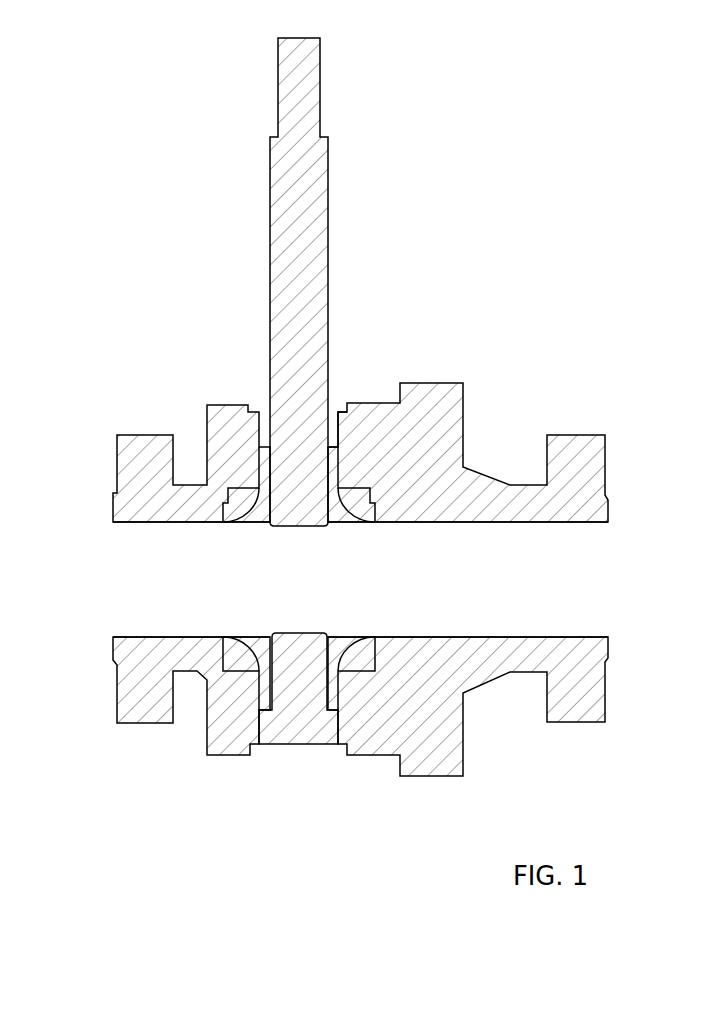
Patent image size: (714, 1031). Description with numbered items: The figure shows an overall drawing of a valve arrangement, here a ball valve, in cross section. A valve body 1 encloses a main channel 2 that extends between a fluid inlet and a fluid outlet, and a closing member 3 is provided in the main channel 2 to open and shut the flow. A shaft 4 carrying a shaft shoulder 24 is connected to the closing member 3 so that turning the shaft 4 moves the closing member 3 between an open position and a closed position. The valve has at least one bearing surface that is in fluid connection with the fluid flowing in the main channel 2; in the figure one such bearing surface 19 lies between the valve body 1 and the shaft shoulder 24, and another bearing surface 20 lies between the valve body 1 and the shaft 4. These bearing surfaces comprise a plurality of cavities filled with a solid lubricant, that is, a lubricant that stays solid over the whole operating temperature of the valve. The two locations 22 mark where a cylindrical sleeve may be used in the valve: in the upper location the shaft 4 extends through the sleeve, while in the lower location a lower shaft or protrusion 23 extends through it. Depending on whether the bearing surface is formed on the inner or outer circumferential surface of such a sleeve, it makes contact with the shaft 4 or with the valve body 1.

The valve body 1 is at (438, 398).
The main channel 2 is at (140, 572).
The closing member 3 is at (250, 508).
The shaft 4 is at (283, 249).
The bearing surface between valve body and shaft shoulder 19 is at (337, 455).
The bearing surface between valve body and shaft 20 is at (266, 469).
The cylindrical sleeve locations 22 is at (339, 469).
The lower shaft or protrusion 23 is at (308, 716).
The shaft shoulder 24 is at (336, 413).